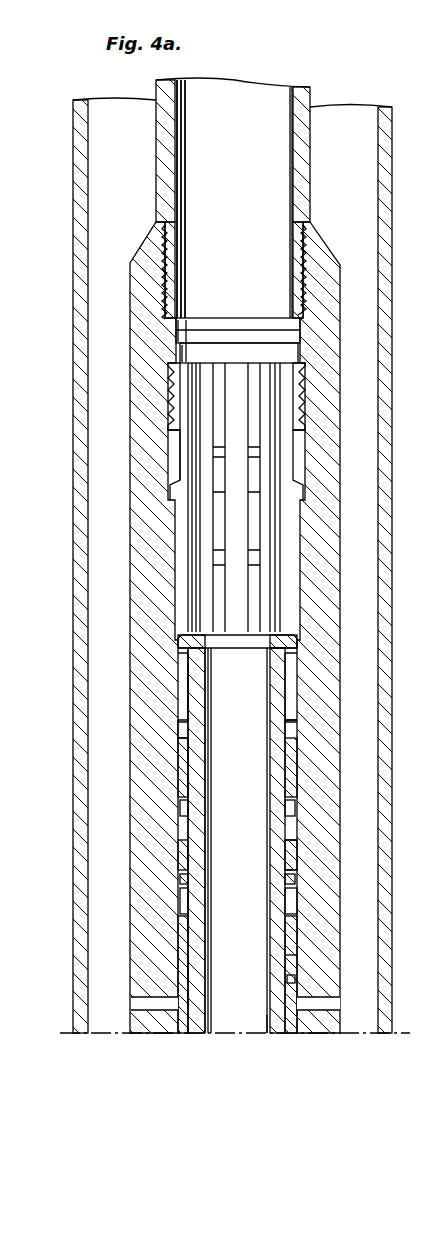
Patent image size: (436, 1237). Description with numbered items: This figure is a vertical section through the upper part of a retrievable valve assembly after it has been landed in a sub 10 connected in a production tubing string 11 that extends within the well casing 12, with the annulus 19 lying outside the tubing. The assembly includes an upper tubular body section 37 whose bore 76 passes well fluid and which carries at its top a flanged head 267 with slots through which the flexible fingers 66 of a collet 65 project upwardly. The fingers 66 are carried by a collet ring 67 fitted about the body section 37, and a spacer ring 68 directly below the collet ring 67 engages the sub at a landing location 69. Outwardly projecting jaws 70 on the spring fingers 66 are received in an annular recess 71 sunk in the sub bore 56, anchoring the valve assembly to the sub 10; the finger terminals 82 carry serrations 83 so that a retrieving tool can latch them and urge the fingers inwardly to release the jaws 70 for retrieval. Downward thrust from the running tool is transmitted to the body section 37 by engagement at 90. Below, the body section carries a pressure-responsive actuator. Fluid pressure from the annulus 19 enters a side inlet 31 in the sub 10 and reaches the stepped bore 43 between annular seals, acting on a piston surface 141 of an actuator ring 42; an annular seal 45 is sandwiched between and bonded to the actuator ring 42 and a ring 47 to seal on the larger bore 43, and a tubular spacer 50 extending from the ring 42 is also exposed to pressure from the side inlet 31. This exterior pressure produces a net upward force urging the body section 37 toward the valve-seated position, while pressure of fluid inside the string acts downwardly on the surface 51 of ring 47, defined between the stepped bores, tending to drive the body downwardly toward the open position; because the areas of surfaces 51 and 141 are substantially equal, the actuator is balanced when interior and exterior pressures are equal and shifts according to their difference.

The sub 10 is at (352, 596).
The production tubing string 11 is at (156, 148).
The well casing 12 is at (92, 831).
The annulus 19 is at (357, 463).
The side inlet 31 is at (320, 1003).
The upper tubular body section 37 is at (278, 786).
The actuator ring 42 is at (288, 905).
The stepped bore 43 is at (290, 982).
The annular seal 45 is at (285, 880).
The ring 47 is at (283, 851).
The tubular spacer 50 is at (290, 960).
The surface 51 is at (292, 845).
The sub bore 56 is at (181, 587).
The collet 65 is at (302, 671).
The flexible fingers 66 is at (183, 684).
The collet ring 67 is at (185, 731).
The spacer ring 68 is at (290, 766).
The landing location 69 is at (292, 802).
The jaws 70 is at (172, 503).
The annular recess 71 is at (302, 500).
The bore 76 is at (272, 1020).
The collet finger terminals 82 is at (297, 409).
The serrations 83 is at (170, 378).
The engagement 90 is at (276, 636).
The piston surface 141 is at (293, 921).
The flanged head 267 is at (168, 642).